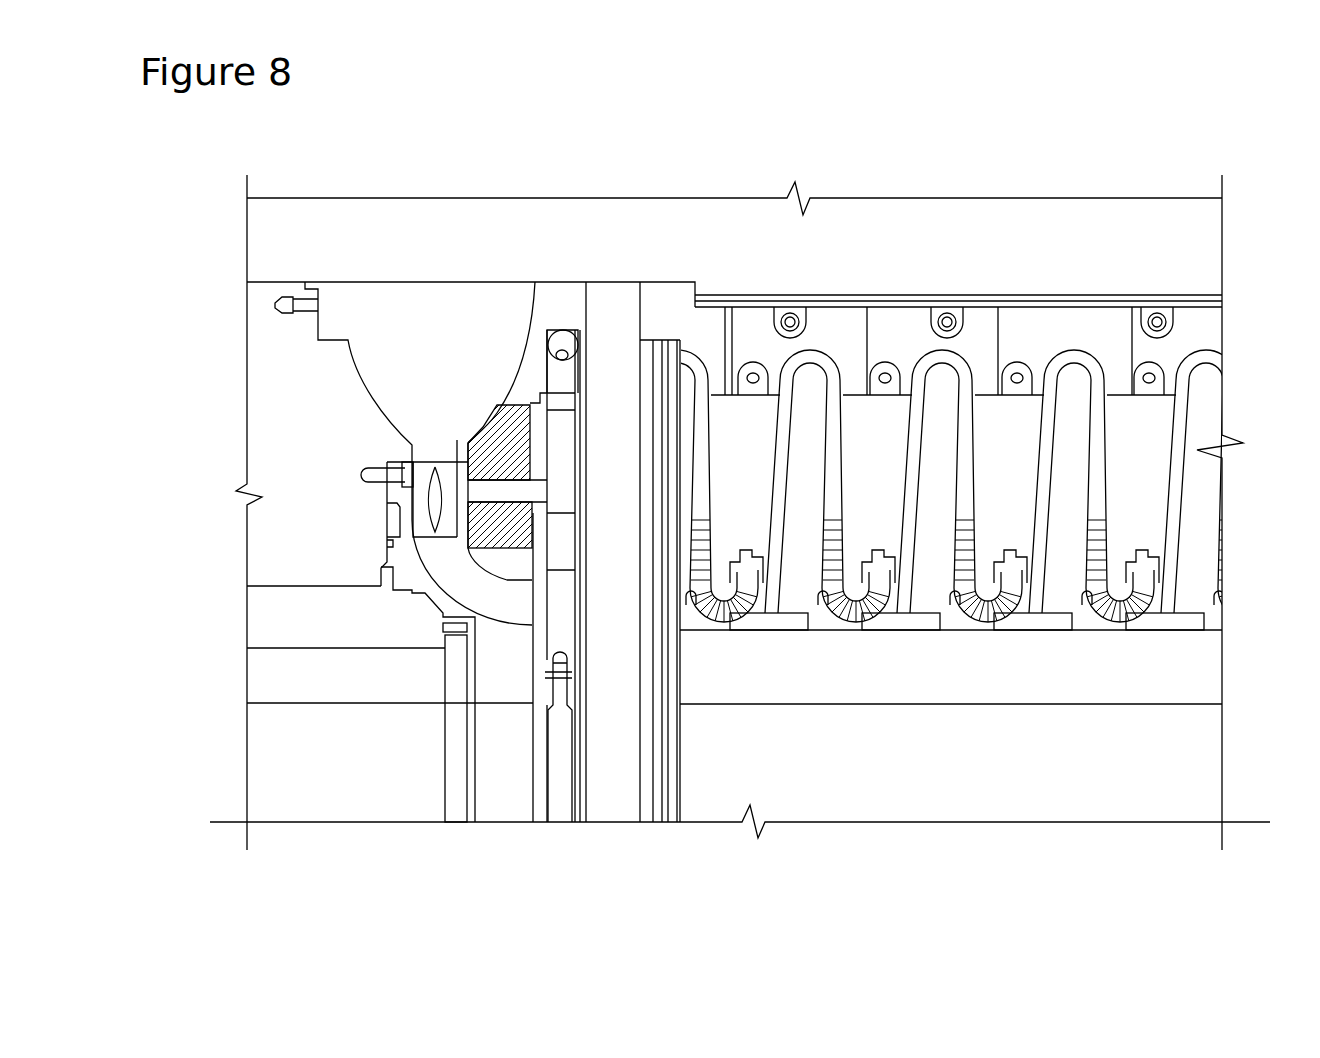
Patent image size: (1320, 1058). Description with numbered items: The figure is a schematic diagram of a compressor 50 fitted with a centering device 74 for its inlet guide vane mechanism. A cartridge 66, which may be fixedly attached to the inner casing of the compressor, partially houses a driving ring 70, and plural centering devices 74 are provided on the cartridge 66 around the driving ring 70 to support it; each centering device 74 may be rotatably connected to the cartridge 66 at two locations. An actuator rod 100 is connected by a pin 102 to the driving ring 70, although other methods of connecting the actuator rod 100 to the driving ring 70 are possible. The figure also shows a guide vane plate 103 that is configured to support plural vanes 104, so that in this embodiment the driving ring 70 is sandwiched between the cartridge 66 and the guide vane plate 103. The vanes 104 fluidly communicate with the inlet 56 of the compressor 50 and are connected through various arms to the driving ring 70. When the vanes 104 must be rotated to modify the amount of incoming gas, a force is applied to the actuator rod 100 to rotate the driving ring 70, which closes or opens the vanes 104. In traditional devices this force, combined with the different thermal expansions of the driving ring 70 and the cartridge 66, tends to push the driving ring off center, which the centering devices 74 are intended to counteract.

The compressor 50 is at (730, 143).
The inlet 56 is at (382, 386).
The cartridge 66 is at (617, 797).
The driving ring 70 is at (558, 463).
The centering device 74 is at (563, 335).
The actuator rod 100 is at (557, 805).
The pin 102 is at (548, 670).
The guide vane plate 103 is at (500, 530).
The vanes 104 is at (407, 515).